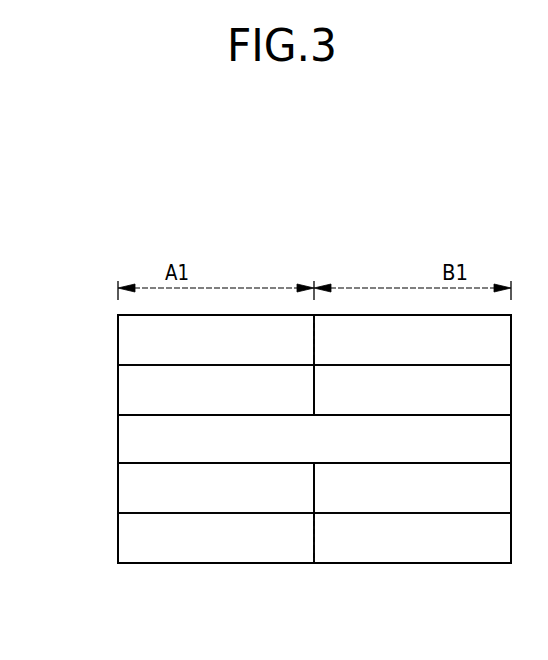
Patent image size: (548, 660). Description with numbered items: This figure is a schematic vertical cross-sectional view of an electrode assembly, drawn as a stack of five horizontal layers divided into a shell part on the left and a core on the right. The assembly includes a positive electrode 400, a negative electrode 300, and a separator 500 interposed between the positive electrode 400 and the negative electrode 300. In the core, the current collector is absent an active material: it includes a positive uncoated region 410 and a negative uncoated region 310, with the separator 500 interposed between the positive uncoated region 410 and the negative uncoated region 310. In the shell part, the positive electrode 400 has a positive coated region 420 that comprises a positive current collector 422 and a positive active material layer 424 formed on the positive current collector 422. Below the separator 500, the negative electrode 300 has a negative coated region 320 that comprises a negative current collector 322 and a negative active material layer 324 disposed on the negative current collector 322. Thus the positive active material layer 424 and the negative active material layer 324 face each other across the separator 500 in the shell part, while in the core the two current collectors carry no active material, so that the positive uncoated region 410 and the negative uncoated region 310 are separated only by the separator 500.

The negative electrode 300 is at (262, 549).
The negative uncoated region 310 is at (414, 571).
The negative coated region 320 is at (230, 571).
The negative current collector 322 is at (130, 542).
The negative active material layer 324 is at (130, 489).
The positive electrode 400 is at (262, 321).
The positive uncoated region 410 is at (378, 313).
The positive coated region 420 is at (262, 313).
The positive current collector 422 is at (130, 339).
The positive active material layer 424 is at (130, 389).
The separator 500 is at (130, 441).